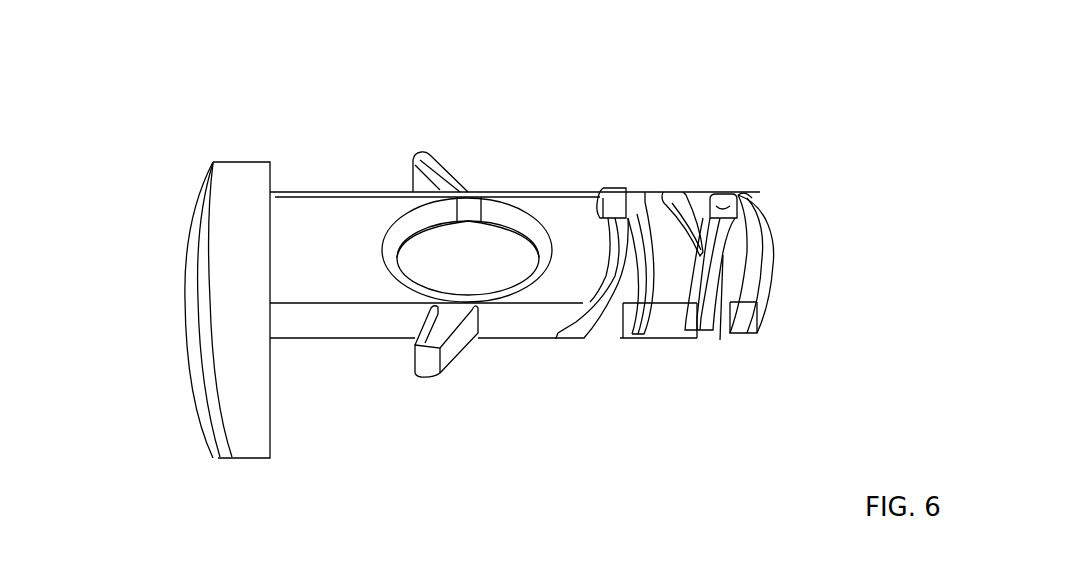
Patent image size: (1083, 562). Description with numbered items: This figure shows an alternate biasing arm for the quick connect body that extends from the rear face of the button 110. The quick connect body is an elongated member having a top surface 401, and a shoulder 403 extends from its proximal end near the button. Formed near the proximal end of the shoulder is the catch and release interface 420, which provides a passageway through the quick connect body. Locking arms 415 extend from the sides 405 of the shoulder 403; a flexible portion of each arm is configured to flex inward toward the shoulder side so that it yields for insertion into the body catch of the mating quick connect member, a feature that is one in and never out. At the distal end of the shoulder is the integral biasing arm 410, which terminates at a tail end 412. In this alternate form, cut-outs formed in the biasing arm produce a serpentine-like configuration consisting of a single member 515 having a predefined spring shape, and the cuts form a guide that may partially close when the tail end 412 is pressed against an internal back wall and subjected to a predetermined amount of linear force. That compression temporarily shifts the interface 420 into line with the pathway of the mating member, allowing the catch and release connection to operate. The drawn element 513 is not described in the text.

The button 110 is at (200, 326).
The top surface 401 is at (308, 175).
The shoulder 403 is at (712, 180).
The sides 405 is at (657, 343).
The biasing arm 410 is at (752, 150).
The tail end 412 is at (766, 246).
The locking arms 415 is at (428, 388).
The catch and release interface 420 is at (505, 215).
The single member 515 is at (666, 192).
The fin rib 513 is at (720, 340).